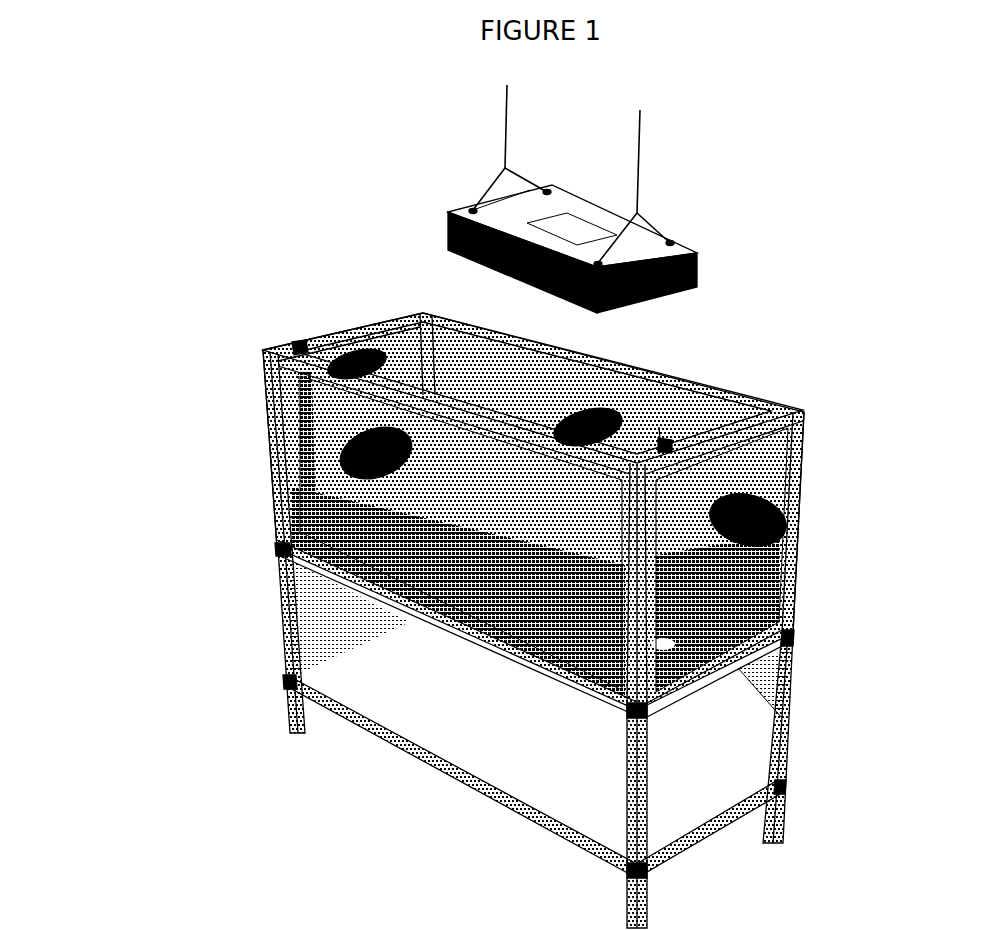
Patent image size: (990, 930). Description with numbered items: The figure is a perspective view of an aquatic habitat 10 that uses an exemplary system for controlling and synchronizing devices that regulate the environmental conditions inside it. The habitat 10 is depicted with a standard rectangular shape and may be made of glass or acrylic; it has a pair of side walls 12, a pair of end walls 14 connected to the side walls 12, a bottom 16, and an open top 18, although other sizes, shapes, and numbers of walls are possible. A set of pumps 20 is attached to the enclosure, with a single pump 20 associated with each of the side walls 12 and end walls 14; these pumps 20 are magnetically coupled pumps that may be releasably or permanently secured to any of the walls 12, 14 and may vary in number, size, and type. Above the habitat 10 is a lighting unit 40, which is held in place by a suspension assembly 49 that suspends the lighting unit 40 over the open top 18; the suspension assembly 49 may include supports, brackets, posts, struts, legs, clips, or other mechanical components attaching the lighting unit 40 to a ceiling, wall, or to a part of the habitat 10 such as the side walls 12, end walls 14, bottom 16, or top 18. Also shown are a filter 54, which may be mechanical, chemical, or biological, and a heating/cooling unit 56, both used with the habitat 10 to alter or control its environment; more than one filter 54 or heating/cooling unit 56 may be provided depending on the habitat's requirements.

The habitat 10 is at (198, 210).
The side walls 12 is at (598, 735).
The end walls 14 is at (796, 572).
The bottom 16 is at (742, 688).
The open top 18 is at (620, 362).
The pumps 20 is at (805, 410).
The lighting unit 40 is at (712, 263).
The suspension assembly 49 is at (505, 168).
The filter 54 is at (794, 652).
The heating/cooling unit 56 is at (292, 343).